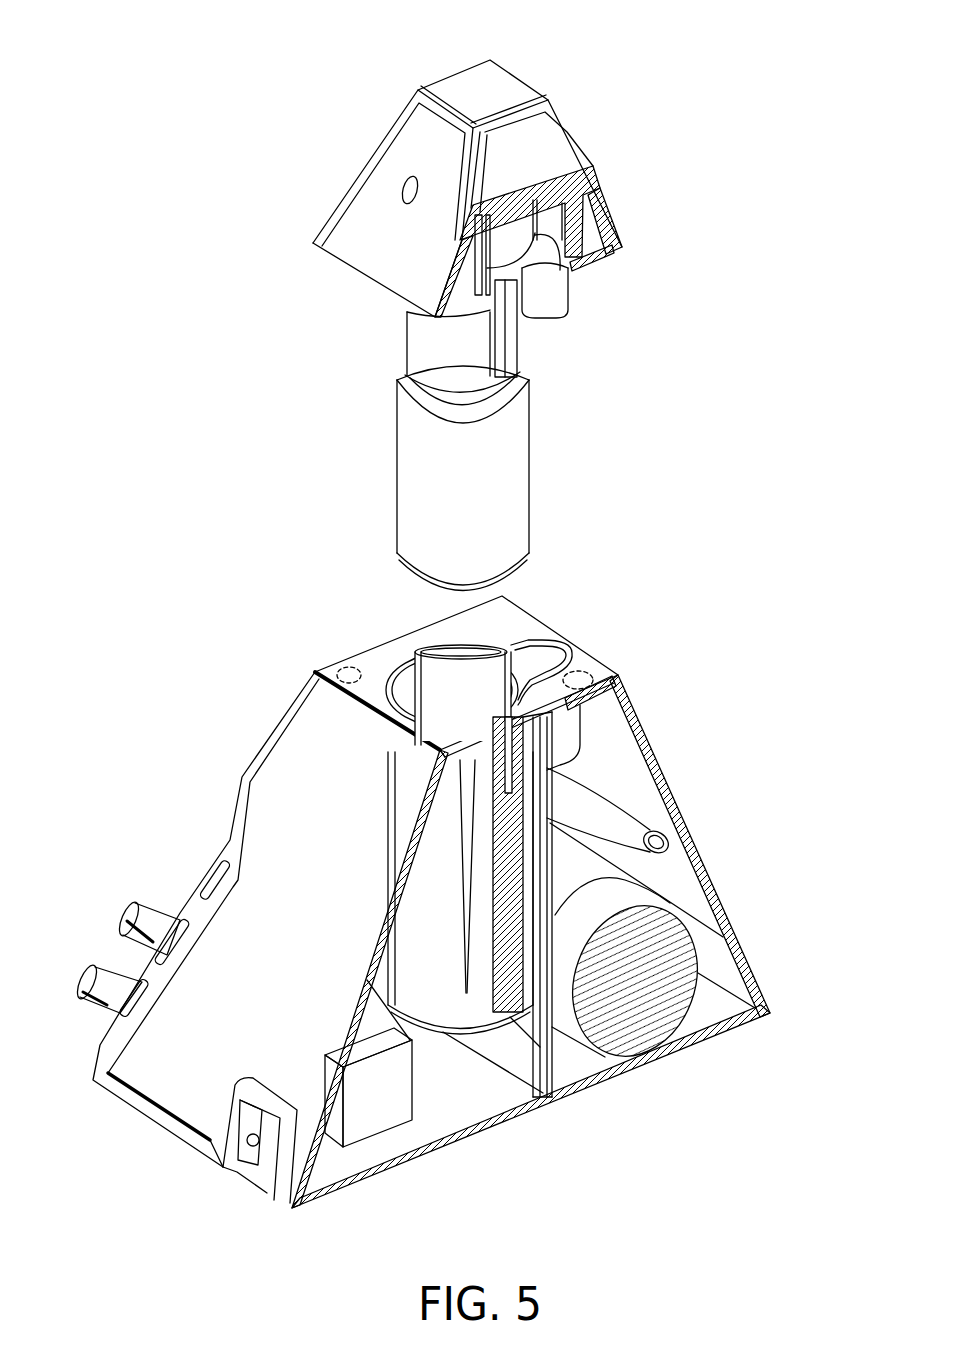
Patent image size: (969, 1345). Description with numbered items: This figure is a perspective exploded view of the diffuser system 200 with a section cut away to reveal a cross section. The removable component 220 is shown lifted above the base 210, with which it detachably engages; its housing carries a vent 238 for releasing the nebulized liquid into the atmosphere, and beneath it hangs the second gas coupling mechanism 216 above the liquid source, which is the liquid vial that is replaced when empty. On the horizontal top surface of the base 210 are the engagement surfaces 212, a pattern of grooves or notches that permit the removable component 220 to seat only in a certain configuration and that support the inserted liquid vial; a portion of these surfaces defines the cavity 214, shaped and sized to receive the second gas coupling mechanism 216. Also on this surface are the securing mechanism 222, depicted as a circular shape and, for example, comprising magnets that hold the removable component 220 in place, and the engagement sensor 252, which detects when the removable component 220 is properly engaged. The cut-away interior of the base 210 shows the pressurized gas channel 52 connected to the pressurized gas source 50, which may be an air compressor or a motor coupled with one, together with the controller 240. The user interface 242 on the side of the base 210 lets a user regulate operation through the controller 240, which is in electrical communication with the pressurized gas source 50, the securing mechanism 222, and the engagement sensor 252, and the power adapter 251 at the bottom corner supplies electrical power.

The diffuser system 200 is at (116, 61).
The removable component 220 is at (652, 55).
The vent 238 is at (398, 165).
The second gas coupling mechanism 216 is at (568, 292).
The base 210 is at (310, 983).
The engagement surfaces 212 is at (465, 652).
The cavity 214 is at (553, 655).
The securing mechanism 222 is at (588, 673).
The engagement sensor 252 is at (348, 668).
The pressurized gas channel 52 is at (617, 830).
The pressurized gas source 50 is at (652, 897).
The controller 240 is at (392, 1115).
The user interface 242 is at (87, 902).
The power adapter 251 is at (232, 1181).